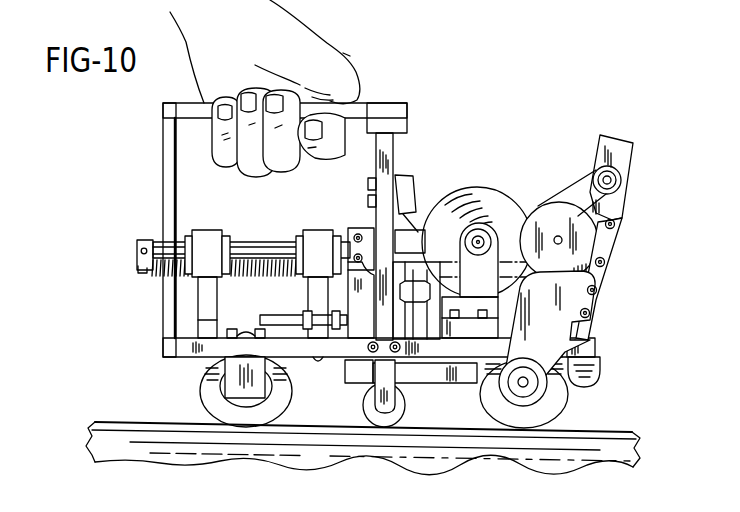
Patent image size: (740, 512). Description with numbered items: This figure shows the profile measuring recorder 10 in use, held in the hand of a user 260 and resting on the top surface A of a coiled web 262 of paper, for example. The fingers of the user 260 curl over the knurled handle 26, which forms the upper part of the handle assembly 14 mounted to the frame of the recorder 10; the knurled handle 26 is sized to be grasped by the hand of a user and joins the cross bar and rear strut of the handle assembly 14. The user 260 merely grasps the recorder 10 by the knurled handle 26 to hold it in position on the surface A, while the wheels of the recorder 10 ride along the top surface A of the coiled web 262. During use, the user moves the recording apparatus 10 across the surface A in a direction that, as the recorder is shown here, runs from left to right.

The profile measuring apparatus 10 is at (426, 188).
The handle assembly 14 is at (160, 178).
The knurled handle 26 is at (354, 103).
The user 260 is at (318, 49).
The coiled web 262 is at (600, 457).
The top surface A is at (594, 432).